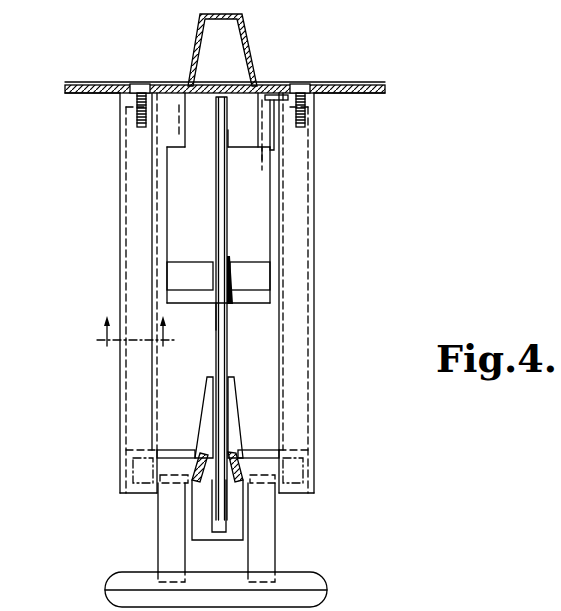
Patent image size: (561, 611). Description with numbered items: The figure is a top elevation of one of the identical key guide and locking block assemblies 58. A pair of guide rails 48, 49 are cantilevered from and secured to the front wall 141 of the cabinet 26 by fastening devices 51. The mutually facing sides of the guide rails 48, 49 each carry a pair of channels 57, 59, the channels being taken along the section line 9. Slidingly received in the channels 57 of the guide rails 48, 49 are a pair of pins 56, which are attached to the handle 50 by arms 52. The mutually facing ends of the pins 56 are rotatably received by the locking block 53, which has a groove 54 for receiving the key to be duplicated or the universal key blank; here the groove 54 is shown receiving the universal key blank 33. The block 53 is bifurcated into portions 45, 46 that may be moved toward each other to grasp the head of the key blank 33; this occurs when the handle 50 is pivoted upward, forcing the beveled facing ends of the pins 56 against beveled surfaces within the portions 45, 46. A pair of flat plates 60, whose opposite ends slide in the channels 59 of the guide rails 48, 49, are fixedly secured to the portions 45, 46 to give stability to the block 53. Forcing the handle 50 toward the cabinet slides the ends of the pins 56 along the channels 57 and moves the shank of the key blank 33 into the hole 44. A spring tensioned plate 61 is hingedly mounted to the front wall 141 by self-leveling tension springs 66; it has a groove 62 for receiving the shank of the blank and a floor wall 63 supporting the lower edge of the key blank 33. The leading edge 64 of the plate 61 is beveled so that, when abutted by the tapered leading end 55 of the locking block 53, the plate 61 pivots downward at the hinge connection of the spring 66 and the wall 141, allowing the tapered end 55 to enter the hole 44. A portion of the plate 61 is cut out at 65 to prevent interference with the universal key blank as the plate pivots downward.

The cabinet 26 is at (73, 96).
The front wall 141 is at (92, 96).
The fastening devices 51 is at (143, 85).
The hole 44 is at (217, 72).
The guide rail 48 is at (127, 145).
The guide rail 49 is at (316, 128).
The cut out 65 is at (198, 148).
The self-leveling tension springs 66 is at (262, 154).
The spring tensioned plate 61 is at (262, 207).
The groove 62 is at (226, 253).
The floor wall 63 is at (226, 300).
The leading edge 64 is at (200, 286).
The universal key blank 33 is at (219, 315).
The section line 9- 9 is at (136, 333).
The channels 57 is at (133, 358).
The channels 59 is at (133, 396).
The flat plates 60 is at (165, 452).
The pins 56 is at (177, 463).
The portion 45 is at (210, 407).
The groove 54 is at (229, 412).
The portion 46 is at (235, 435).
The tapered leading end 55 is at (243, 380).
The arms 52 is at (163, 535).
The locking block 53 is at (233, 536).
The handle 50 is at (125, 585).
The key guide and locking block assembly 58 is at (372, 533).